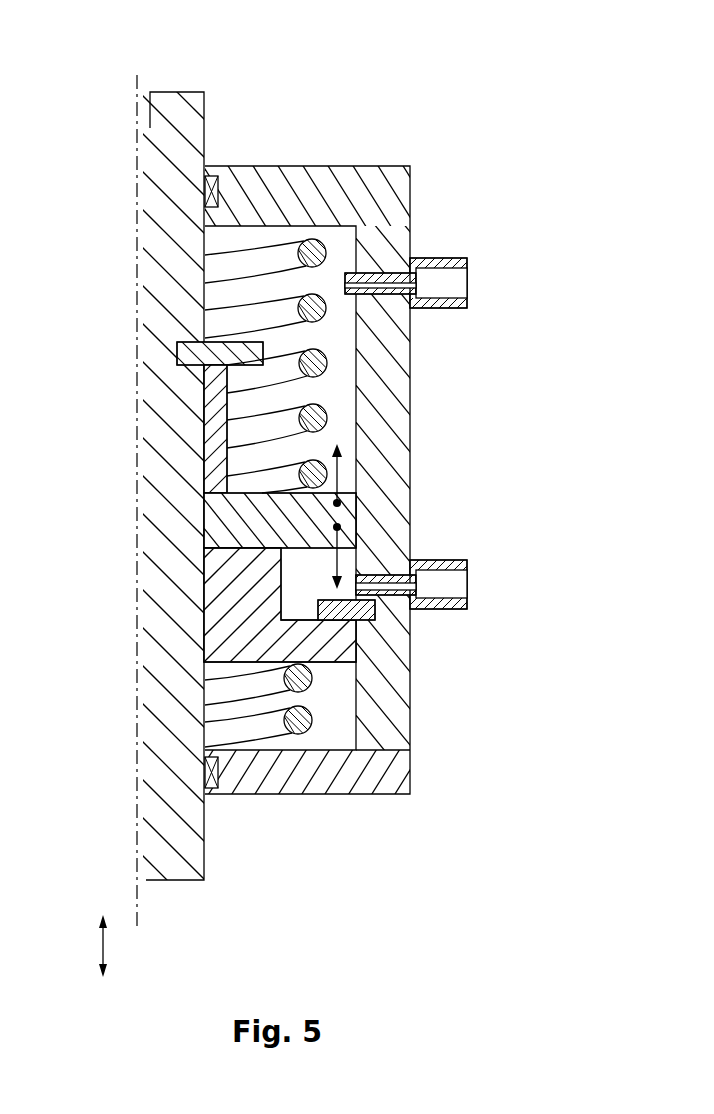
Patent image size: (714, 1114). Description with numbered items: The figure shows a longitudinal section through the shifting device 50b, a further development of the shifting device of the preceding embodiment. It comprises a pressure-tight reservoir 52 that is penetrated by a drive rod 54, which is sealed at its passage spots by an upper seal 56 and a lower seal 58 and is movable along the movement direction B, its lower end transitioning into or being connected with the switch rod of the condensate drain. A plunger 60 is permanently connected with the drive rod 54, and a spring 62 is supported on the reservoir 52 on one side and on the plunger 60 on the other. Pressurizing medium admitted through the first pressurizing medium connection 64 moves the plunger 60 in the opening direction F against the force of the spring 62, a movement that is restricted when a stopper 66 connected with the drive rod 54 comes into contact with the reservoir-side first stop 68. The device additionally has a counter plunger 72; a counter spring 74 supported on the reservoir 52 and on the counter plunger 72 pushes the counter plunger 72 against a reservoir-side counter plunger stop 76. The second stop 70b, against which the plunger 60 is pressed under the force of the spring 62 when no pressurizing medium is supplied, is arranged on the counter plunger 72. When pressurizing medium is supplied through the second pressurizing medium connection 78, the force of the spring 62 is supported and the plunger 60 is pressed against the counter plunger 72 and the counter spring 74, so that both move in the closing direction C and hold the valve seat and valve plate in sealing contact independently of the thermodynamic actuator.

The shifting device 50b is at (331, 122).
The pressure-tight reservoir 52 is at (410, 212).
The drive rod 54 is at (165, 445).
The upper seal 56 is at (207, 193).
The lower seal 58 is at (207, 775).
The plunger 60 is at (233, 500).
The spring 62 is at (327, 361).
The first pressurizing medium connection 64 is at (440, 585).
The stopper 66 is at (195, 355).
The first stop 68 is at (215, 230).
The second stop 70b is at (234, 541).
The counter plunger 72 is at (232, 613).
The counter spring 74 is at (290, 728).
The counter plunger stop 76 is at (349, 623).
The second pressurizing medium connection 78 is at (440, 285).
The opening direction F is at (340, 465).
The closing direction C is at (337, 562).
The movement direction B is at (103, 948).